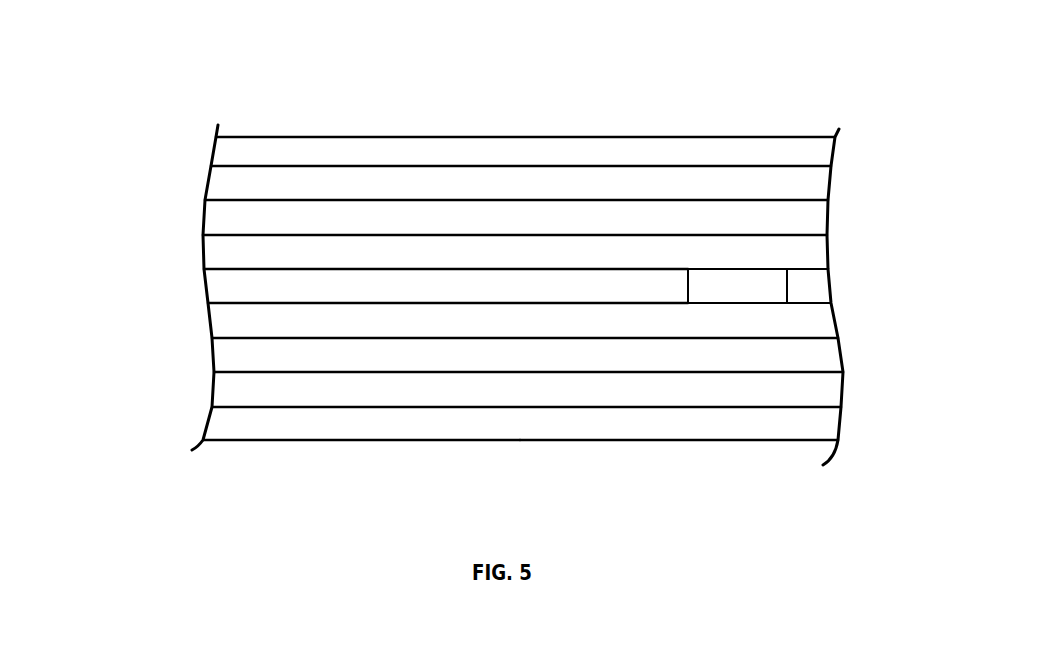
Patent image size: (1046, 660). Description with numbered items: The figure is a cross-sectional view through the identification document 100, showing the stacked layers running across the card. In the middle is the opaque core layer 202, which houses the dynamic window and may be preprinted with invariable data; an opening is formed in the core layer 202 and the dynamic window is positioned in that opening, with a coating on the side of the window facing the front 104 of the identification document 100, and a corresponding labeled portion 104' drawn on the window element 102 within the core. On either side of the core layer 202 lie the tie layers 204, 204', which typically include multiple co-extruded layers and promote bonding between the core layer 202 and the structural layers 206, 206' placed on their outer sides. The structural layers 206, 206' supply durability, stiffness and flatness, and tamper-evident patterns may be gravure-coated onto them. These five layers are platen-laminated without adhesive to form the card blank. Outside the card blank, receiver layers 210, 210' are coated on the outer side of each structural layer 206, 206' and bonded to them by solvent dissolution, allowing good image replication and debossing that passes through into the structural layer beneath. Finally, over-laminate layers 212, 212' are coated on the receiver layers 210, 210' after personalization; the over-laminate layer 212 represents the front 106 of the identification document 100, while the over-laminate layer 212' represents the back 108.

The identification document 100 is at (403, 101).
The embedded component 102 is at (768, 278).
The front 104 is at (849, 331).
The second portion of component 104' is at (812, 222).
The front 106 is at (787, 137).
The back 108 is at (290, 433).
The core layer 202 is at (218, 287).
The tie layer 204 is at (400, 275).
The structural layer 206 is at (462, 215).
The receiver layer 210 is at (465, 166).
The over-laminate layer 212 is at (492, 112).
The tie layer 204' is at (560, 289).
The structural layer 206' is at (570, 346).
The receiver layer 210' is at (558, 436).
The over-laminate layer 212' is at (679, 473).